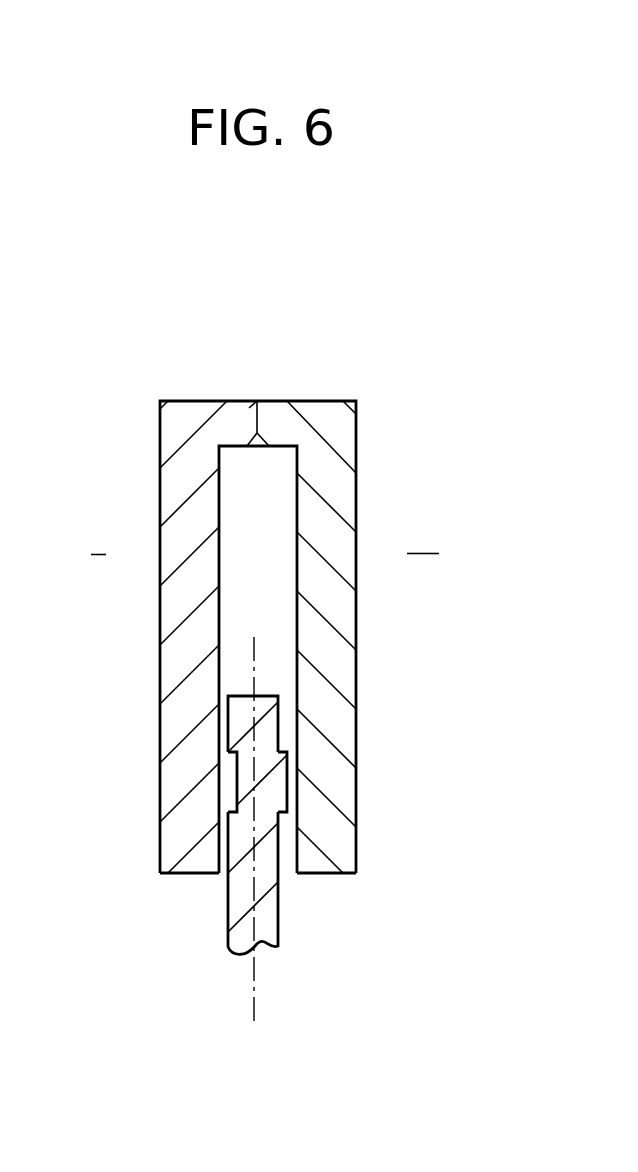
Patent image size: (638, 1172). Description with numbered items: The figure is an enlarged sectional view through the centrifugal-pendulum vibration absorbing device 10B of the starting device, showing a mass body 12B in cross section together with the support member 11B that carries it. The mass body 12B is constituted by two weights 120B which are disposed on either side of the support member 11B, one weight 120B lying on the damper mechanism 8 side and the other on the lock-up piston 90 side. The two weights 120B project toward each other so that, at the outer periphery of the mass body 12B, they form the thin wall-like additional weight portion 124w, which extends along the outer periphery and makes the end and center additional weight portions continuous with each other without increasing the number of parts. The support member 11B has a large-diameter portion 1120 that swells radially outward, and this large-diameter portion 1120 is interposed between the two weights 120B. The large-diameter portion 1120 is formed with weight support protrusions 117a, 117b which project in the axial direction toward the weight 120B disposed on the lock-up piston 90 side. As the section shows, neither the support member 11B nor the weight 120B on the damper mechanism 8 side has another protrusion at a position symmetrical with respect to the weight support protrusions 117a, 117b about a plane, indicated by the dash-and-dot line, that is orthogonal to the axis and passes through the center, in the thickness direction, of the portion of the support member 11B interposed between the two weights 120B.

The centrifugal-pendulum vibration absorbing device 10B is at (383, 417).
The mass body 12B is at (140, 445).
The damper mechanism 8 is at (98, 541).
The lock-up piston 90 is at (423, 540).
The wall-like additional weight portion 124w is at (257, 401).
The weight 120B is at (158, 787).
The support member 11B is at (268, 920).
The large-diameter portion 1120 is at (245, 712).
The weight support protrusion 117a is at (293, 765).
The weight support protrusion 117b is at (257, 782).